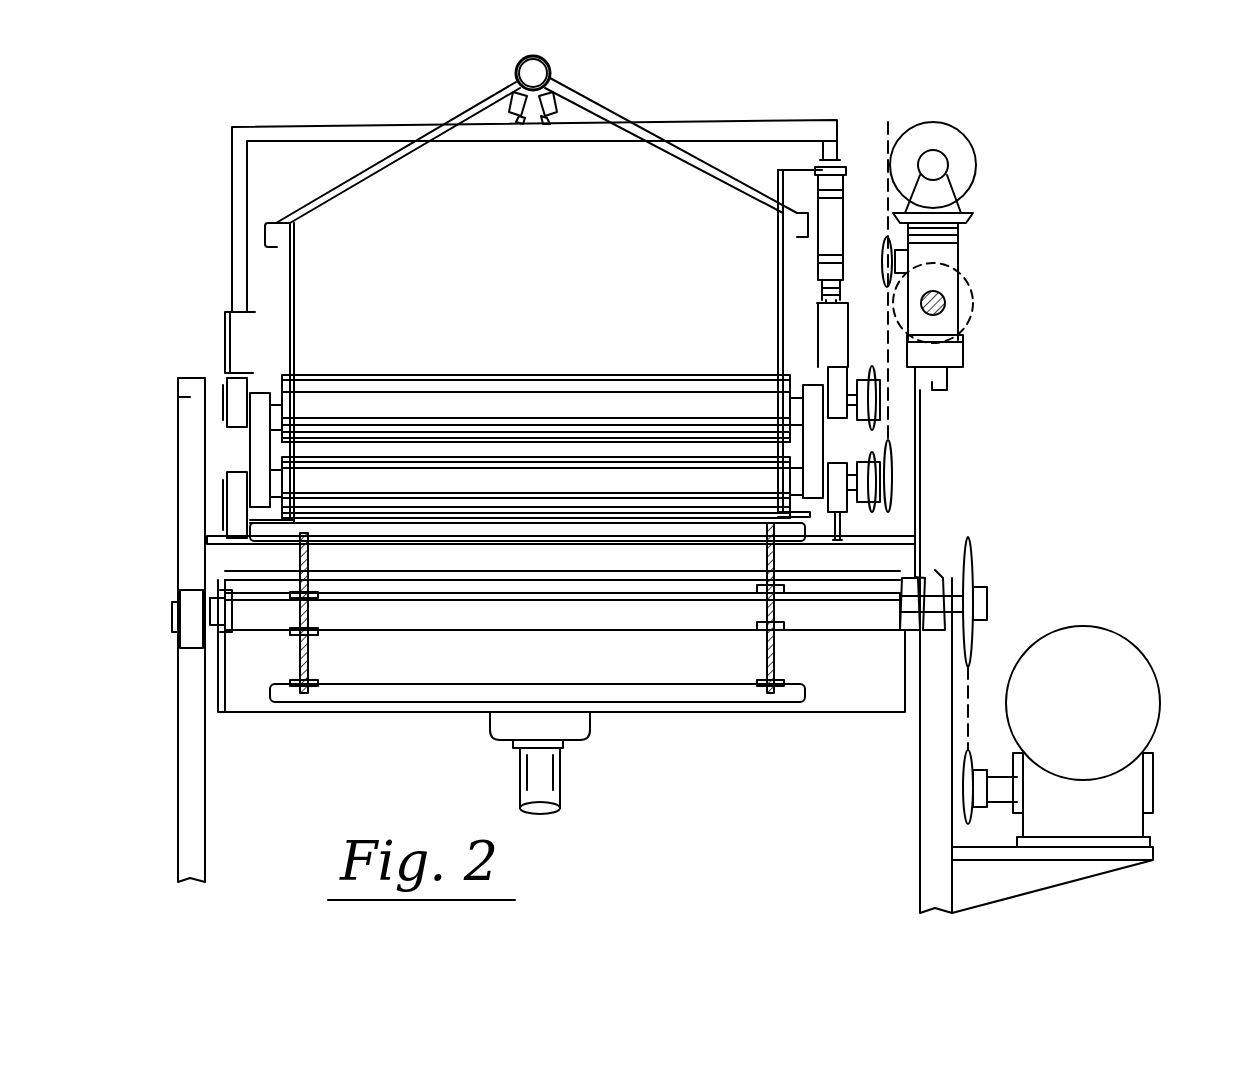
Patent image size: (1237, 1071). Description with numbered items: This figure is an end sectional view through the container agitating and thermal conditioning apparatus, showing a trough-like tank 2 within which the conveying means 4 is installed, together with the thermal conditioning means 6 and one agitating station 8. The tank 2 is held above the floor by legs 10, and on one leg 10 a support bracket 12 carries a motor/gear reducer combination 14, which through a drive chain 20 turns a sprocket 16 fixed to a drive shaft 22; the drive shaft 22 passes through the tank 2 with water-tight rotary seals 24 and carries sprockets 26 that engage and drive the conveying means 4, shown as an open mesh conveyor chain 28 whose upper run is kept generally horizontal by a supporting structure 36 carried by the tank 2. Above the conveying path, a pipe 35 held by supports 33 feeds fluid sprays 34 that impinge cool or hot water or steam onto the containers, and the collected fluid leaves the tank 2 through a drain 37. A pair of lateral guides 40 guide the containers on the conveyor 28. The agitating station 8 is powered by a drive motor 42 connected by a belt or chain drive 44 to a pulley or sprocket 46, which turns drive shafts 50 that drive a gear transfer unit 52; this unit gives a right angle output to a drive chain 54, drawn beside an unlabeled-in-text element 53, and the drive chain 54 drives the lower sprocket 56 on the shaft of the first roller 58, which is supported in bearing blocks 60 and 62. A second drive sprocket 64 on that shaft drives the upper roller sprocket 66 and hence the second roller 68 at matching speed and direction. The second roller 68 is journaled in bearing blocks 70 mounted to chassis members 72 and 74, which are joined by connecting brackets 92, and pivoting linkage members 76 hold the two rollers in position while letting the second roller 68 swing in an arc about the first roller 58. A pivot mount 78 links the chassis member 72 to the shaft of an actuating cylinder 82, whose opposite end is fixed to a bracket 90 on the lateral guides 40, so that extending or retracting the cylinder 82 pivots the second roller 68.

The tank 2 is at (865, 522).
The conveying means 4 is at (337, 668).
The thermal conditioning means 6 is at (563, 68).
The agitating station 8 is at (188, 327).
The legs 10 is at (180, 778).
The support bracket 12 is at (1070, 880).
The motor/gear reducer combination 14 is at (1155, 668).
The sprocket 16 is at (975, 550).
The drive chain 20 is at (968, 731).
The drive shaft 22 is at (988, 597).
The water-tight rotary seals 24 is at (905, 616).
The sprockets 26 is at (300, 653).
The open mesh conveyor chain 28 is at (268, 542).
The supports 33 is at (483, 98).
The fluid sprays 34 is at (521, 118).
The pipe 35 is at (522, 69).
The supporting structure 36 is at (508, 568).
The drain 37 is at (563, 774).
The lateral guides 40 is at (778, 240).
The drive motor 42 is at (968, 135).
The belt or chain drive 44 is at (948, 187).
The pulley or sprocket 46 is at (986, 309).
The drive shafts 50 is at (950, 293).
The gear transfer unit 52 is at (950, 255).
The belt 53 is at (885, 237).
The drive chain 54 is at (978, 347).
The lower sprocket 56 is at (893, 500).
The first roller 58 is at (327, 456).
The bearing block 60 is at (925, 540).
The bearing block 62 is at (228, 518).
The second drive sprocket 64 is at (878, 434).
The upper roller sprocket 66 is at (870, 414).
The second roller 68 is at (414, 372).
The bearing blocks 70 is at (226, 390).
The chassis member 72 is at (835, 325).
The chassis member 74 is at (226, 312).
The pivoting linkage members 76 is at (250, 447).
The pivot mount 78 is at (822, 288).
The actuating cylinder 82 is at (825, 241).
The bracket 90 is at (785, 172).
The connecting brackets 92 is at (232, 164).